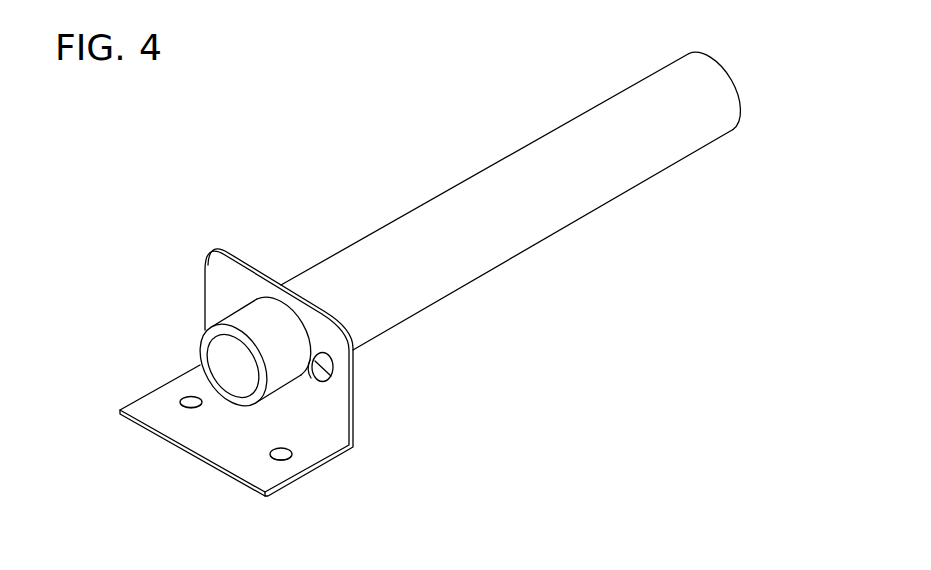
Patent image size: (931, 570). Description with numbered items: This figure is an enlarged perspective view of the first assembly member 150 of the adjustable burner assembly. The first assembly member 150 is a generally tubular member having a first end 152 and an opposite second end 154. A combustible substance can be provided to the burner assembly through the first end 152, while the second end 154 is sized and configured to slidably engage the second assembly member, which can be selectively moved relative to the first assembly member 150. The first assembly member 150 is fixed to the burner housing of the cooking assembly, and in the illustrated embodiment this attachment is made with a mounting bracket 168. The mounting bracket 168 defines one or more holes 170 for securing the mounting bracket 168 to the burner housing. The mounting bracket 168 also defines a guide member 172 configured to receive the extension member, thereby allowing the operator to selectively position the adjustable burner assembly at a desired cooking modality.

The first assembly member 150 is at (325, 196).
The first end 152 is at (243, 404).
The second end 154 is at (740, 107).
The mounting bracket 168 is at (170, 420).
The mounting hole 170 is at (291, 457).
The guide member 172 is at (333, 370).